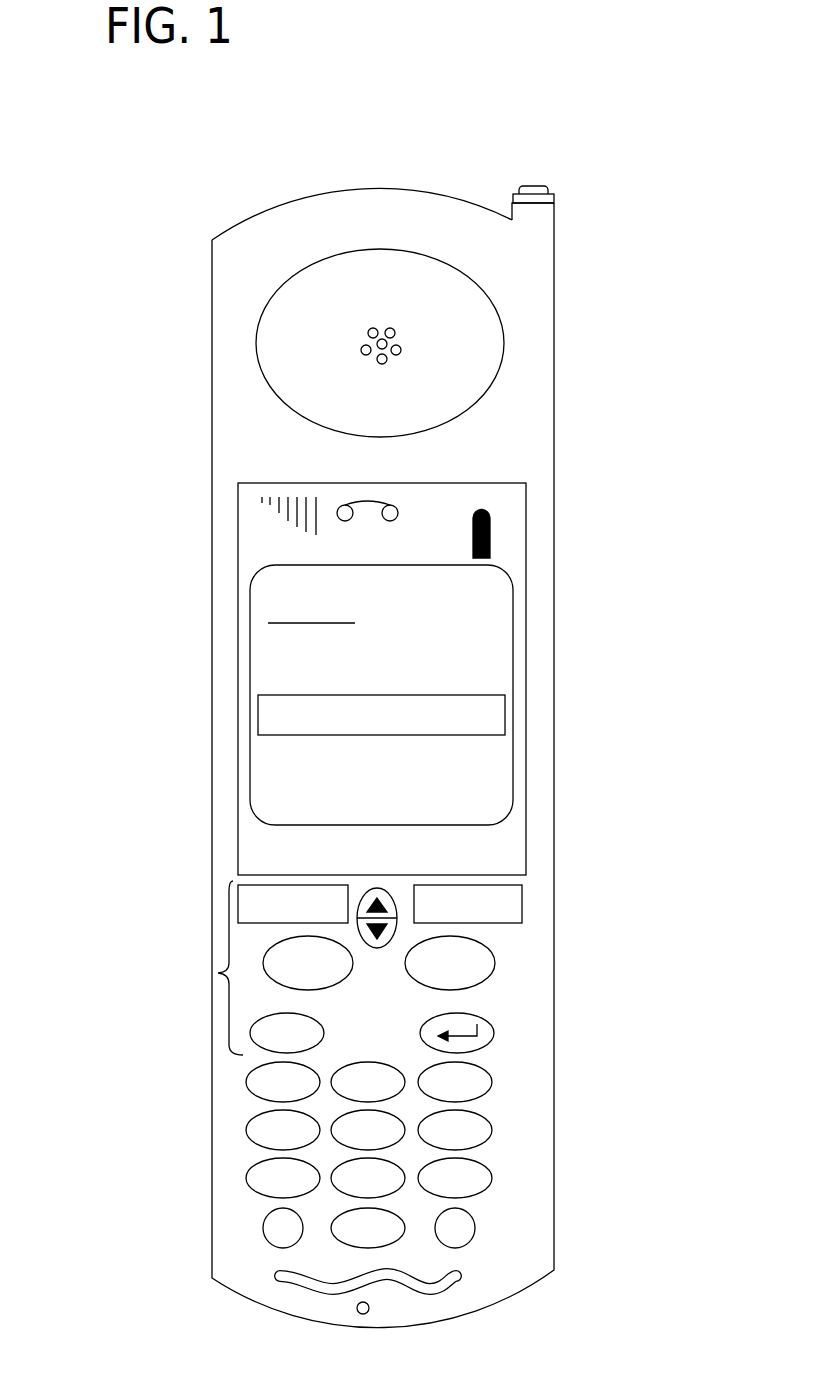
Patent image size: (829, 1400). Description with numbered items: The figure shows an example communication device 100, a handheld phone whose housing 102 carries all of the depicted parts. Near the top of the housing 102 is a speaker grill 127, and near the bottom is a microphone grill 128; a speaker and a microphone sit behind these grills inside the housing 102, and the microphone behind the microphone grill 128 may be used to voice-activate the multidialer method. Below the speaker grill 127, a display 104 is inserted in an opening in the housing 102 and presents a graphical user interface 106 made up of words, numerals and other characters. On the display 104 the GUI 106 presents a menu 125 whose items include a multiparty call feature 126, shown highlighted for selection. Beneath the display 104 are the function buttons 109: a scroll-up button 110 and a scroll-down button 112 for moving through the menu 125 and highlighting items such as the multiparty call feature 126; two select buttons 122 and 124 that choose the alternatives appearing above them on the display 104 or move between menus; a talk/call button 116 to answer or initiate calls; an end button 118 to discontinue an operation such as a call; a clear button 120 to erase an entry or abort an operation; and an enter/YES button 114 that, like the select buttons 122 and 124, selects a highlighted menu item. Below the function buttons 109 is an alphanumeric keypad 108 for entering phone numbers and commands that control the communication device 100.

The communication device 100 is at (550, 155).
The housing 102 is at (554, 325).
The display 104 is at (526, 732).
The graphical user interface 106 is at (456, 691).
The alphanumeric keypad 108 is at (475, 1057).
The function buttons 109 is at (213, 973).
The scroll-up button 110 is at (368, 887).
The scroll-down button 112 is at (377, 950).
The enter/YES button 114 is at (493, 1032).
The talk/call button 116 is at (265, 950).
The end button 118 is at (495, 955).
The clear button 120 is at (263, 1048).
The select button 122 is at (238, 893).
The select button 124 is at (523, 893).
The menu 125 is at (362, 605).
The multiparty call feature 126 is at (400, 695).
The speaker grill 127 is at (258, 323).
The microphone grill 128 is at (350, 1313).